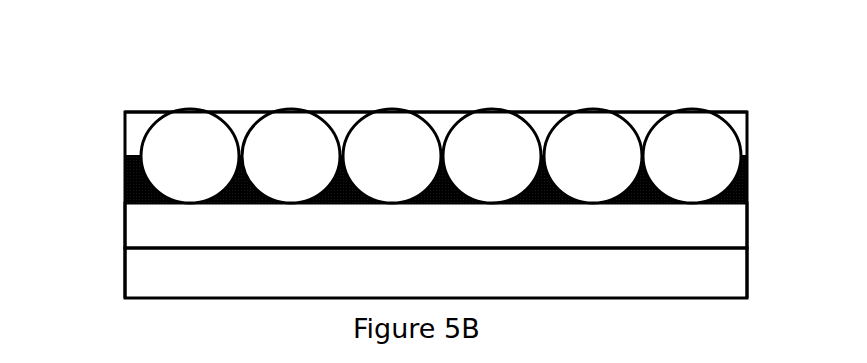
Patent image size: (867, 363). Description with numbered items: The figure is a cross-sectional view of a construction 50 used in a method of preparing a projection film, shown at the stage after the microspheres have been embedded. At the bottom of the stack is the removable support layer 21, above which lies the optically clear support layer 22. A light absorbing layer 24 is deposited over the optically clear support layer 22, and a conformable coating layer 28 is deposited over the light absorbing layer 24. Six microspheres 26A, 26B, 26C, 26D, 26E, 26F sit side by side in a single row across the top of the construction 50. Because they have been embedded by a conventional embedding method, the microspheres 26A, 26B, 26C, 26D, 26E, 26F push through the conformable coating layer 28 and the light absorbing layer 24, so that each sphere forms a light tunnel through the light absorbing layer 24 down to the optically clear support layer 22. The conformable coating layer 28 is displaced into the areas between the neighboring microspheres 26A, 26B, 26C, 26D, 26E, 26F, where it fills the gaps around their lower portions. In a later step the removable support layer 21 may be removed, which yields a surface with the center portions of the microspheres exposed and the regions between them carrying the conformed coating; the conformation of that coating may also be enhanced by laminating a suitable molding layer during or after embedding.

The removable support layer 21 is at (197, 271).
The optically clear support layer 22 is at (188, 223).
The light absorbing layer 24 is at (125, 188).
The microsphere 26A is at (190, 156).
The microsphere 26B is at (291, 156).
The microsphere 26C is at (392, 156).
The microsphere 26D is at (492, 156).
The microsphere 26E is at (593, 156).
The microsphere 26F is at (692, 156).
The conformable coating layer 28 is at (125, 129).
The construction 50 is at (441, 97).